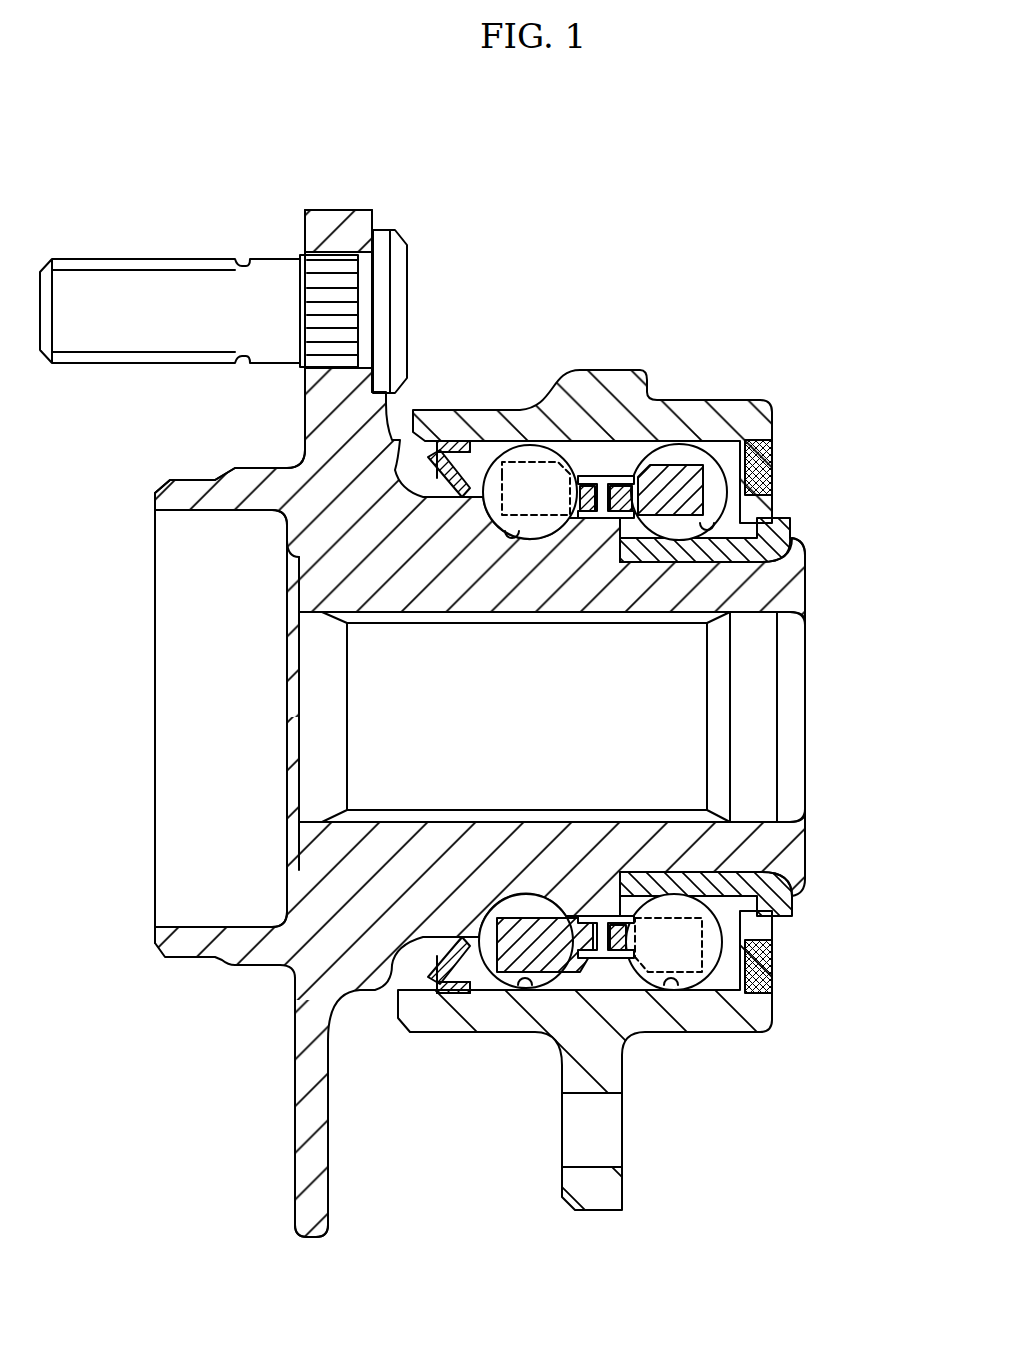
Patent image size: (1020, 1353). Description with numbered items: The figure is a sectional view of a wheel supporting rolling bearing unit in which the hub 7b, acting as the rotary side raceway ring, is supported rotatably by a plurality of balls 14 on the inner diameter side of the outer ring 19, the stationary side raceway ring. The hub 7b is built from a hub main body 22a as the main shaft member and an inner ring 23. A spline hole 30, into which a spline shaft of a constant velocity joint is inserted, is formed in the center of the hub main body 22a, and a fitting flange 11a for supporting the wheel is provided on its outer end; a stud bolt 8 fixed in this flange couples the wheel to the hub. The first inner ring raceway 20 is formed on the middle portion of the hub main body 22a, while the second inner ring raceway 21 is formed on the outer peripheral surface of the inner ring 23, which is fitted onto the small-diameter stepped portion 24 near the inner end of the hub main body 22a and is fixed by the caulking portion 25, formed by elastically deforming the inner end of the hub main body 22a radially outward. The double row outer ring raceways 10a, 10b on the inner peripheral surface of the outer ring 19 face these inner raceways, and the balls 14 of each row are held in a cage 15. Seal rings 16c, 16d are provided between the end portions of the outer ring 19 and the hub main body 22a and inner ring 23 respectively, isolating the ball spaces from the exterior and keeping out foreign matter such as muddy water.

The stud bolt 8 is at (152, 290).
The hub 7b is at (318, 448).
The hub main body 22a is at (318, 560).
The balls 14 is at (668, 460).
The second inner ring raceway 21 is at (725, 513).
The caulking portion 25 is at (783, 565).
The first inner ring raceway 20 is at (505, 527).
The cage 15 is at (612, 500).
The spline hole 30 is at (468, 822).
The small-diameter stepped portion 24 is at (516, 723).
The inner ring 23 is at (752, 925).
The seal ring 16d is at (770, 982).
The outer ring raceway 10a is at (527, 988).
The outer ring raceway 10b is at (670, 990).
The seal ring 16c is at (428, 992).
The outer ring 19 is at (580, 1052).
The fitting flange 11a is at (303, 1132).